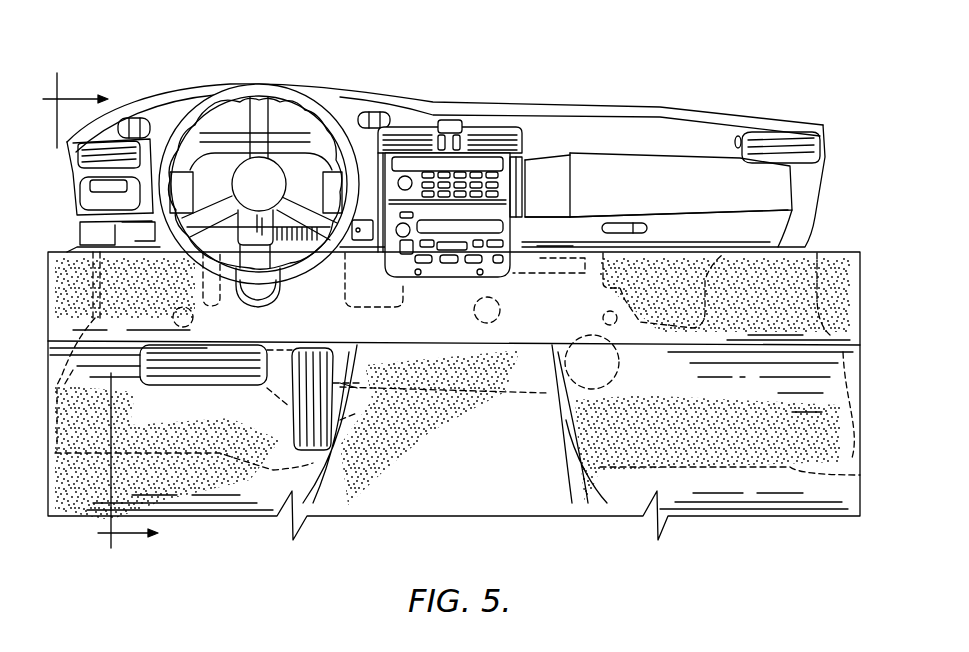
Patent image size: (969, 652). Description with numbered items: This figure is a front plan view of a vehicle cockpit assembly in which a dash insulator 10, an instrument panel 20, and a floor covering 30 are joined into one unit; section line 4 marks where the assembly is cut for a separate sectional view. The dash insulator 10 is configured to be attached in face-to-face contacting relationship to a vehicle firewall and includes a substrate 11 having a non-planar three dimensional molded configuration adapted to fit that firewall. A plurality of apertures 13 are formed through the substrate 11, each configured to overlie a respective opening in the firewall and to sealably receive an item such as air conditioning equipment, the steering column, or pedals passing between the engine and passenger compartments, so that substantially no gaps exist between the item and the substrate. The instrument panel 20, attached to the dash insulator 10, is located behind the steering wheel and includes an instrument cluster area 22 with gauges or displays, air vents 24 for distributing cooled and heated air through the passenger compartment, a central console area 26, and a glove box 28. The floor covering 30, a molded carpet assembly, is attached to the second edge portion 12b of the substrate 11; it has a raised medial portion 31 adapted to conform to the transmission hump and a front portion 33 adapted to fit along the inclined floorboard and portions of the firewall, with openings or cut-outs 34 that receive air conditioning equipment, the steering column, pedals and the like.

The instrument panel 20 is at (516, 70).
The instrument cluster area 22 is at (240, 115).
The air vents 24 is at (456, 122).
The central console area 26 is at (370, 270).
The glove box 28 is at (655, 197).
The front portion 33 is at (522, 312).
The openings or cut-outs 34 is at (258, 307).
The dash insulator 10 is at (737, 236).
The apertures 13 is at (642, 222).
The raised medial portion 31 is at (527, 497).
The substrate 11 is at (692, 472).
The second edge portion 12b is at (826, 478).
The floor covering 30 is at (754, 483).
The section line 4- 4 is at (100, 317).